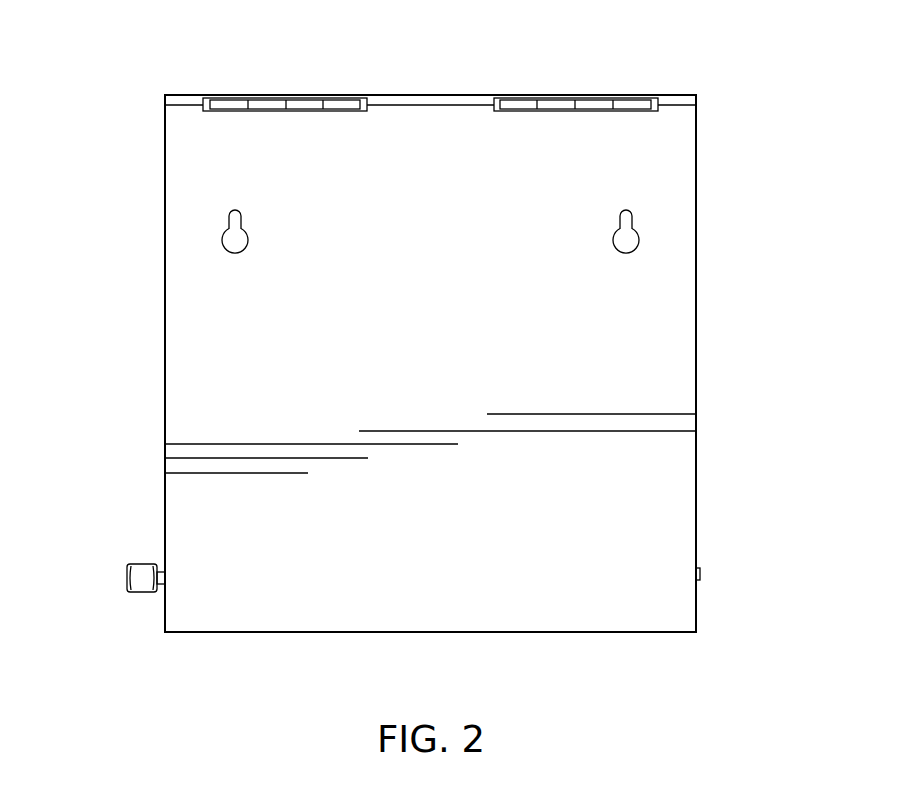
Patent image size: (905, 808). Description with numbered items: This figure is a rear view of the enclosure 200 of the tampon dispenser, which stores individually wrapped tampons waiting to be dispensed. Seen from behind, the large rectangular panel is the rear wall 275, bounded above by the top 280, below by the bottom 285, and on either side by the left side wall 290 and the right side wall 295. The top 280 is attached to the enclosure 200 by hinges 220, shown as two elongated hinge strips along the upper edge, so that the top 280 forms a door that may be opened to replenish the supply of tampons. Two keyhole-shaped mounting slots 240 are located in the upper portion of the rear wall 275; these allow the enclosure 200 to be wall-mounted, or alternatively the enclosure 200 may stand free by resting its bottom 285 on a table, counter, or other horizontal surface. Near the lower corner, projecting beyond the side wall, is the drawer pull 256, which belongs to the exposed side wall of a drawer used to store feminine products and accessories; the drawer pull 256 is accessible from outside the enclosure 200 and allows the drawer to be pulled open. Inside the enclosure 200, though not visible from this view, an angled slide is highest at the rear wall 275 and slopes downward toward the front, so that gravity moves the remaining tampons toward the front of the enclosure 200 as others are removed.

The enclosure 200 is at (753, 600).
The hinges 220 is at (548, 98).
The mounting slots 240 is at (620, 216).
The drawer pull 256 is at (137, 578).
The rear wall 275 is at (320, 583).
The top 280 is at (188, 95).
The bottom 285 is at (497, 632).
The left side wall 290 is at (697, 537).
The right side wall 295 is at (165, 357).